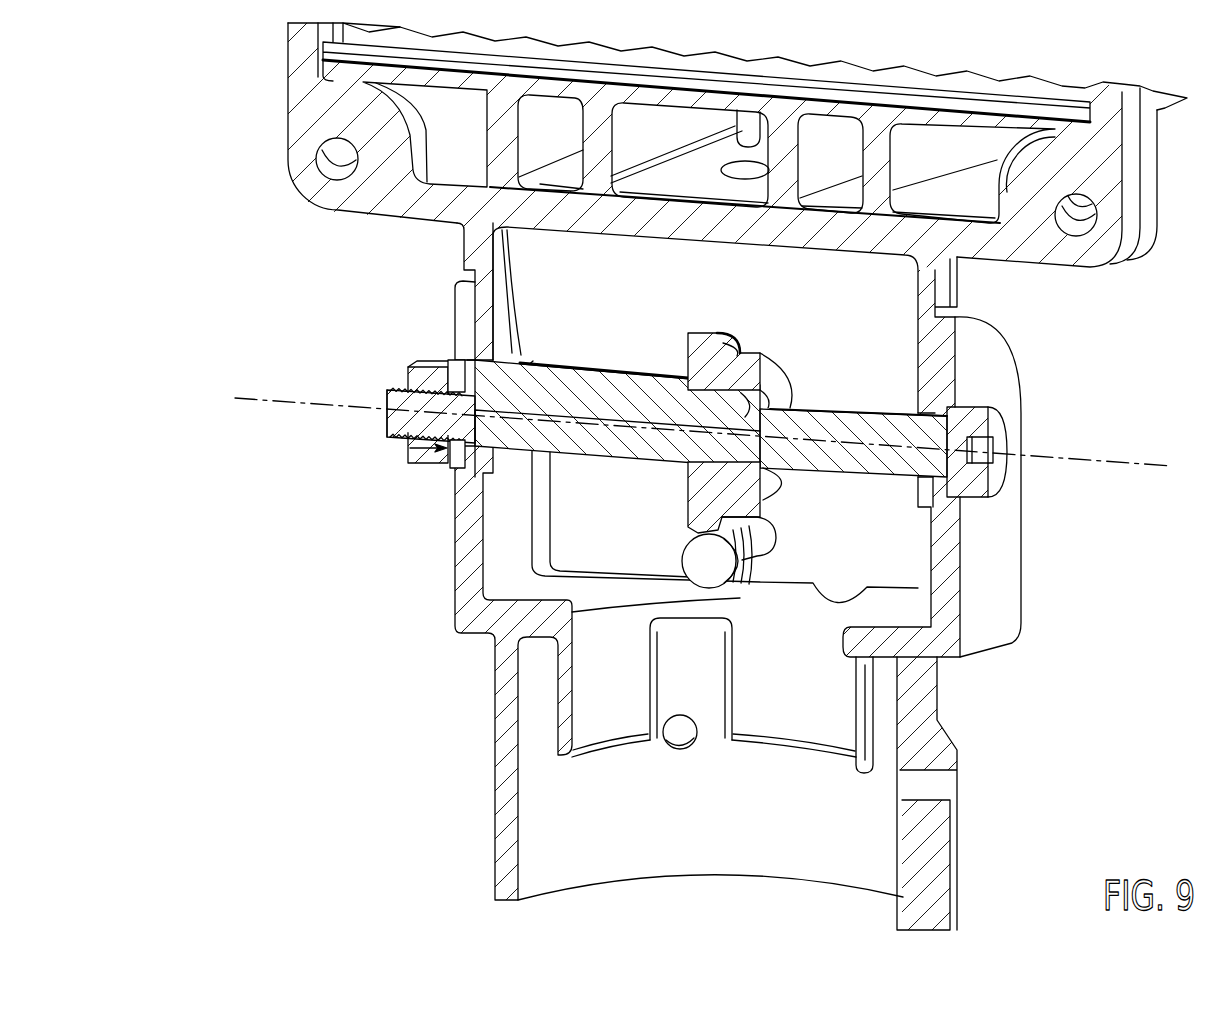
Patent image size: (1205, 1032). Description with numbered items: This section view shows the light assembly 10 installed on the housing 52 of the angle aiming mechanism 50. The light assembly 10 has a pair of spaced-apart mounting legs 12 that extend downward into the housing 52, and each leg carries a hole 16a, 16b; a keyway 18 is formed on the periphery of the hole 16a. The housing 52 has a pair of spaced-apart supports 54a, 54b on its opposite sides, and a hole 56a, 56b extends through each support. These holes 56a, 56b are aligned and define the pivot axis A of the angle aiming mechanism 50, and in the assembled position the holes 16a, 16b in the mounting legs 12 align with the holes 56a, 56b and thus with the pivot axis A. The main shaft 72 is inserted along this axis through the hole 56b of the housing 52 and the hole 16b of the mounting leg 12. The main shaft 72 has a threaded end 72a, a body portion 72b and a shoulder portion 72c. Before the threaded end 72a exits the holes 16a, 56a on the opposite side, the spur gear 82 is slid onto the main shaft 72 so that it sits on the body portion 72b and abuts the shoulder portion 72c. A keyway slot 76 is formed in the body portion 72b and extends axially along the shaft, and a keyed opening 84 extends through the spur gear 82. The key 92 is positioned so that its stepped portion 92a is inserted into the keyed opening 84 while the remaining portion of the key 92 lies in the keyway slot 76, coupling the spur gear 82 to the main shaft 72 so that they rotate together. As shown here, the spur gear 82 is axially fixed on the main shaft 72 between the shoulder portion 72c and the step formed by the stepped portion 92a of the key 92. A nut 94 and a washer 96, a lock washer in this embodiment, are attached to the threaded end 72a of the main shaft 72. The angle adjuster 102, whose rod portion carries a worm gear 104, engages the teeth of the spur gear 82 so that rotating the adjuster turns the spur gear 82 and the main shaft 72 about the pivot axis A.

The light assembly 10 is at (233, 110).
The mounting legs 12 is at (483, 307).
The hole 16a is at (487, 433).
The hole 16b is at (910, 477).
The keyway 18 is at (507, 362).
The angle aiming mechanism 50 is at (746, 578).
The housing 52 is at (490, 876).
The support 54a is at (460, 328).
The support 54b is at (985, 345).
The hole 56a is at (470, 443).
The hole 56b is at (965, 460).
The main shaft 72 is at (626, 419).
The threaded end 72a is at (388, 417).
The body portion 72b is at (617, 421).
The shoulder portion 72c is at (822, 465).
The keyway slot 76 is at (584, 368).
The spur gear 82 is at (723, 400).
The keyed opening 84 is at (762, 405).
The key 92 is at (705, 400).
The stepped portion 92a is at (722, 398).
The nut 94 is at (371, 405).
The washer 96 is at (410, 448).
The angle adjuster 102 is at (669, 577).
The worm gear 104 is at (671, 558).
The pivot axis A is at (277, 403).